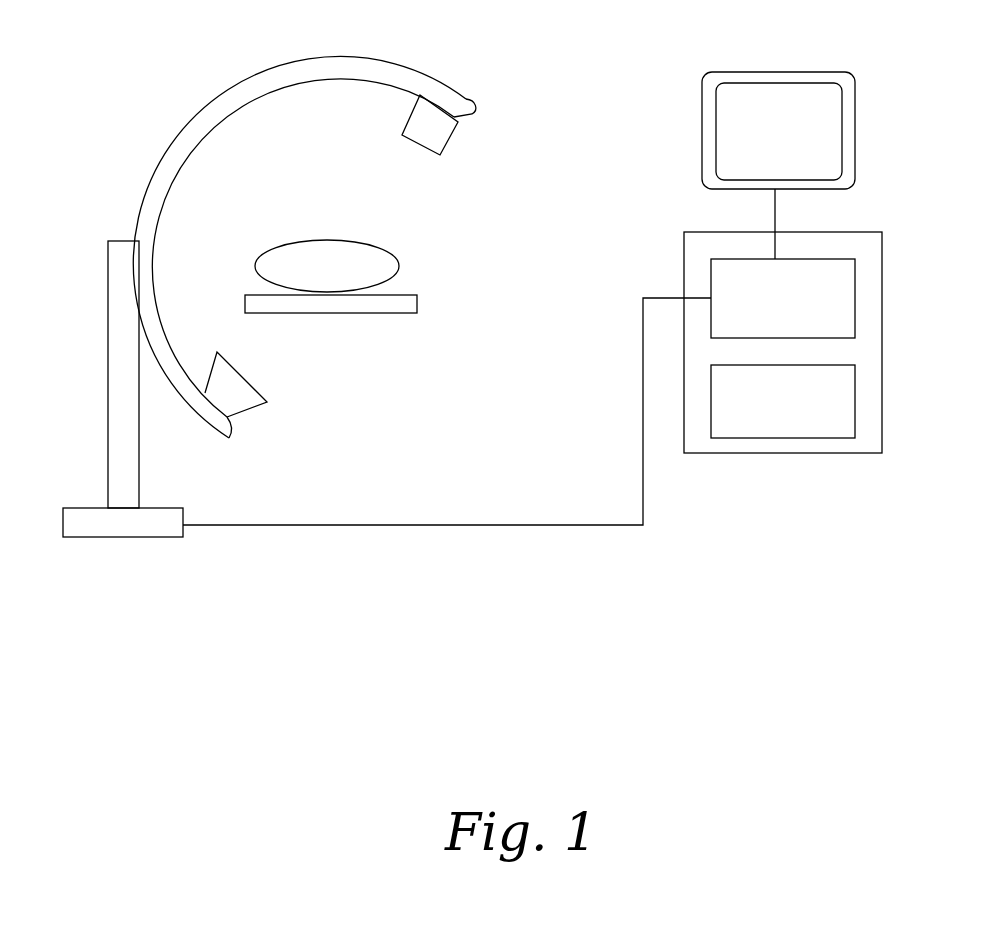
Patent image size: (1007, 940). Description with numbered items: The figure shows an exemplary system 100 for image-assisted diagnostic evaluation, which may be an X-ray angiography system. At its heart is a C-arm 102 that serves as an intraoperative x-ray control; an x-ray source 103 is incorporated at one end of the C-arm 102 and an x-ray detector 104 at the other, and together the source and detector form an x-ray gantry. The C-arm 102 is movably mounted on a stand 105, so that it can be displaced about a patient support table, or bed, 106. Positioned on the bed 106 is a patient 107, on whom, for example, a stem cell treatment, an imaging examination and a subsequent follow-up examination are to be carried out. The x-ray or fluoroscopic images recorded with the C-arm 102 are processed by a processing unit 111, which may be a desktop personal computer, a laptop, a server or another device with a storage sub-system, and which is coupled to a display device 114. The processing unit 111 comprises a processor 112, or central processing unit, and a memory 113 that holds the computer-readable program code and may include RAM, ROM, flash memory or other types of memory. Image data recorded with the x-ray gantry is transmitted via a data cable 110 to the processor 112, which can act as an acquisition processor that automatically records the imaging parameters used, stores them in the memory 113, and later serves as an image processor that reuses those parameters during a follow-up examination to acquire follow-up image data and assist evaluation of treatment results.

The system 100 is at (528, 700).
The C-arm 102 is at (255, 88).
The x-ray source 103 is at (440, 128).
The x-ray detector 104 is at (257, 387).
The stand 105 is at (118, 340).
The patient support table 106 is at (393, 313).
The patient 107 is at (297, 262).
The data cable 110 is at (462, 526).
The processing unit 111 is at (720, 453).
The processor 112 is at (840, 325).
The memory 113 is at (815, 413).
The display device 114 is at (777, 72).